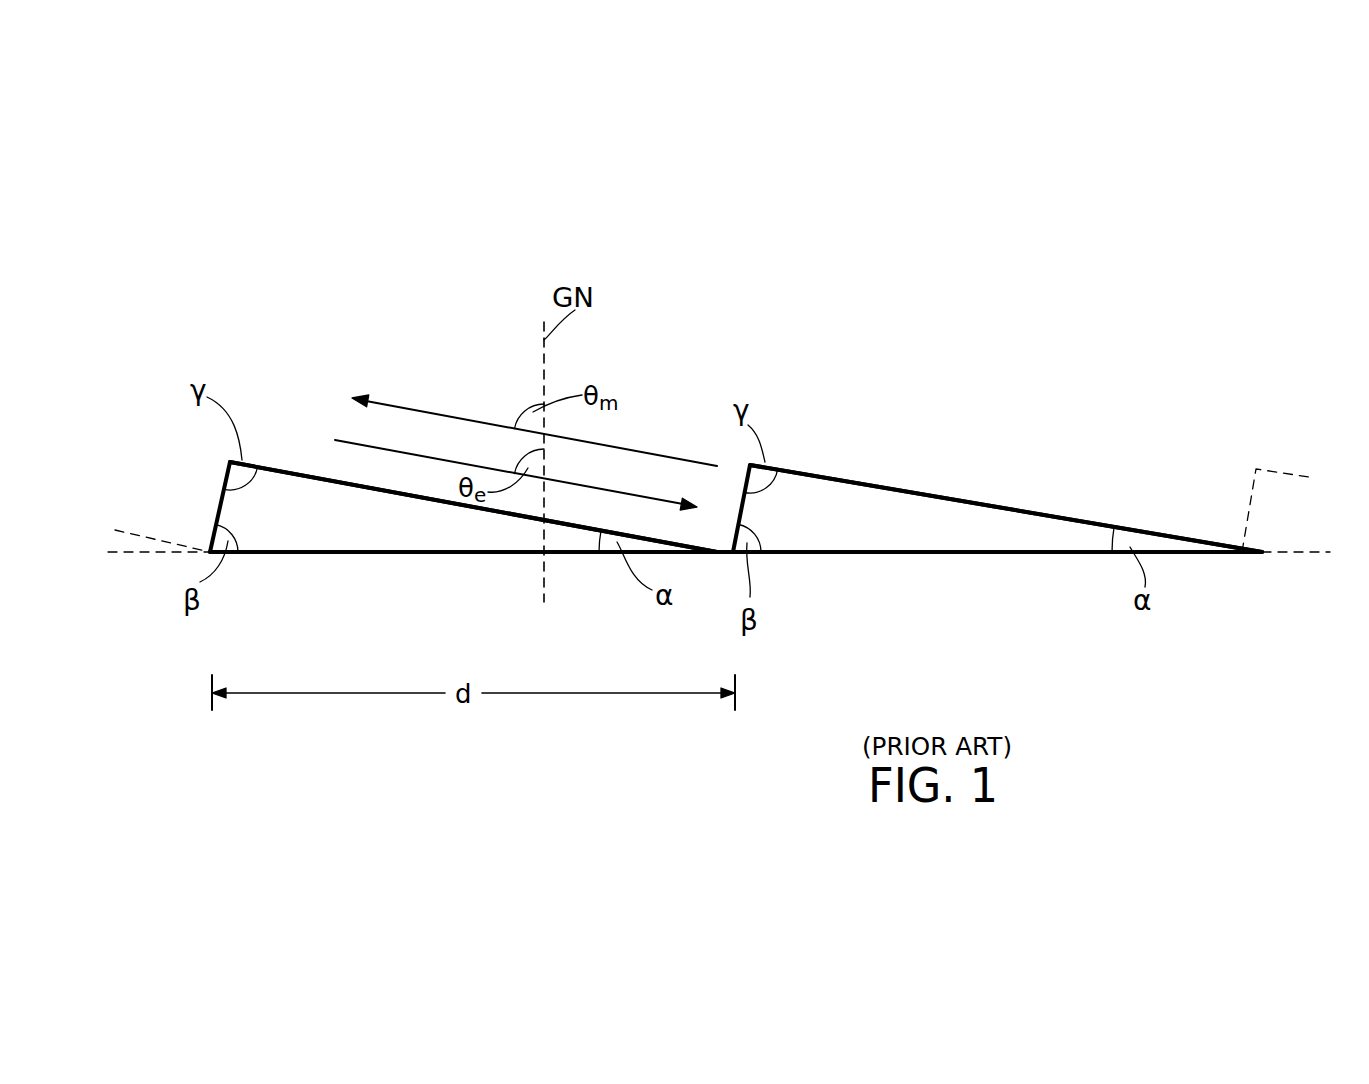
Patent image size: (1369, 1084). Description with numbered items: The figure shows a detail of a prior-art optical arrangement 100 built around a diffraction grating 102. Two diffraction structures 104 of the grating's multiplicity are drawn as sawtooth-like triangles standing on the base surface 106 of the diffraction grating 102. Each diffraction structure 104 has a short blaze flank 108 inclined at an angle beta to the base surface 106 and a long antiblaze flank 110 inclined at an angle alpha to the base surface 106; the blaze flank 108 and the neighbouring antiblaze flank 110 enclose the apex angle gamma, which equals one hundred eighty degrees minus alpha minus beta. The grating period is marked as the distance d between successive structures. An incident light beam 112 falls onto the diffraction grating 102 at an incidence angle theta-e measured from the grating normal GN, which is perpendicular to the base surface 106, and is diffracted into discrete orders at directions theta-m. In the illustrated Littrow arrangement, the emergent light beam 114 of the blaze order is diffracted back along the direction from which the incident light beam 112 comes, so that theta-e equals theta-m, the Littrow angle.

The optical arrangement 100 is at (648, 303).
The diffraction grating 102 is at (915, 438).
The diffraction structures 104 is at (280, 455).
The base surface 106 is at (450, 554).
The blaze flank 108 is at (221, 497).
The antiblaze flank 110 is at (303, 475).
The incident light beam 112 is at (405, 453).
The emergent light beam 114 is at (433, 412).